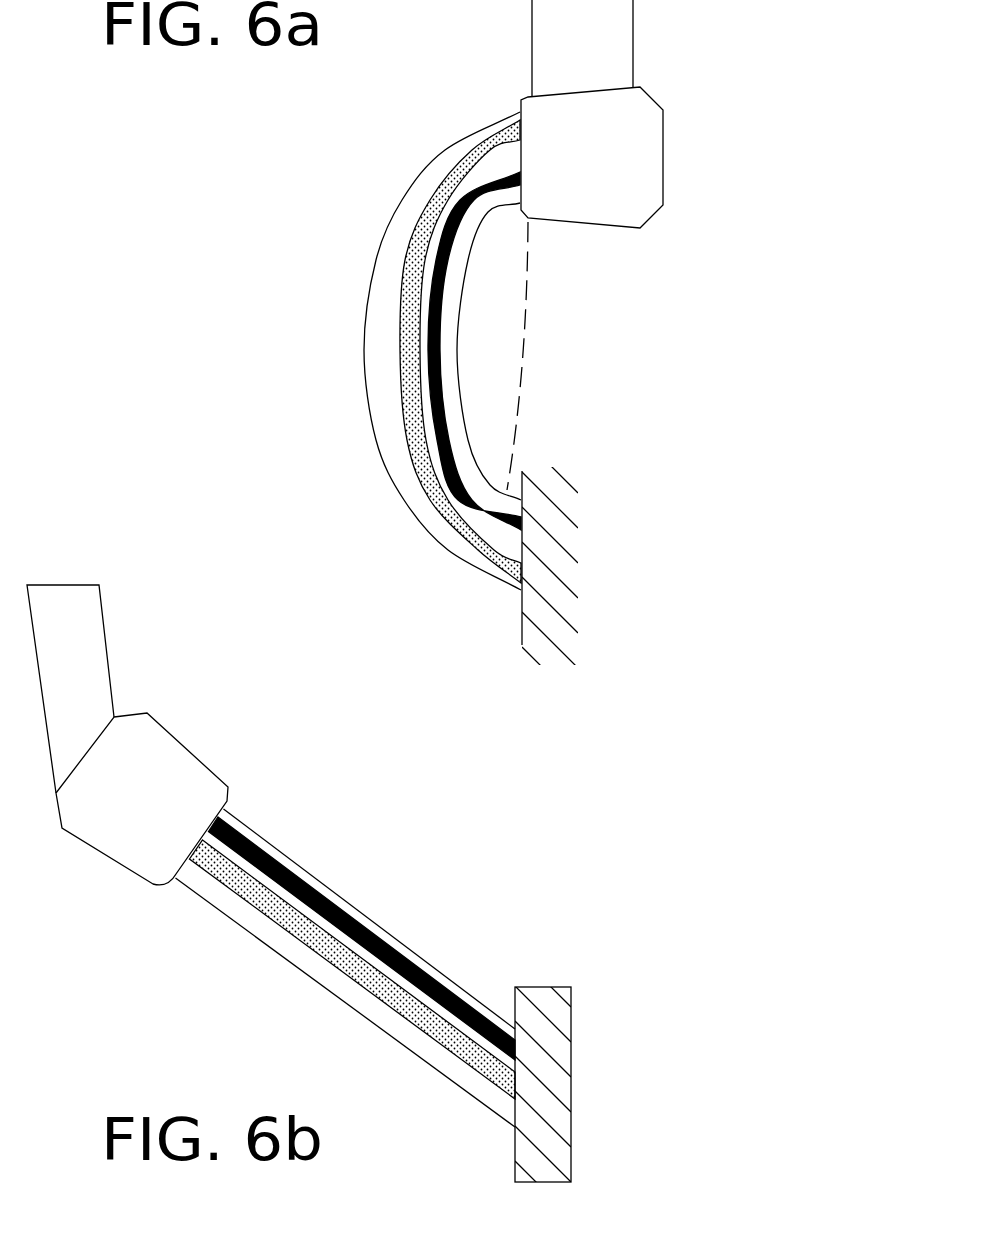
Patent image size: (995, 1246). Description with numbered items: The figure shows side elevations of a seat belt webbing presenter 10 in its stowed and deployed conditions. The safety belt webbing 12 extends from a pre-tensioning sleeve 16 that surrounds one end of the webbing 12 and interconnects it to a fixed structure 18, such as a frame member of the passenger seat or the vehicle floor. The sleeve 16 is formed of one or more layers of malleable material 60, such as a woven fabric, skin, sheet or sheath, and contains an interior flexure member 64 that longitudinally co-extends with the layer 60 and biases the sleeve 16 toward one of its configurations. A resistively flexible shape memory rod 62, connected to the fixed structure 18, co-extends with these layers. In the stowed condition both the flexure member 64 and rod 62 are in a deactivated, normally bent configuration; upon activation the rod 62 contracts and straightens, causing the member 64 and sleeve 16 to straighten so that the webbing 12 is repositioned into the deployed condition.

In FIG. 6a, the presenter 10 is at (677, 302).
In FIG. 6a, the safety belt webbing 12 is at (606, 55).
In FIG. 6b, the safety belt webbing 12 is at (98, 655).
In FIG. 6a, the pre-tensioning sleeve 16 is at (612, 180).
In FIG. 6b, the pre-tensioning sleeve 16 is at (169, 806).
In FIG. 6a, the fixed structure 18 is at (575, 525).
In FIG. 6b, the fixed structure 18 is at (543, 1084).
In FIG. 6a, the malleable material layer 60 is at (452, 135).
In FIG. 6a, the shape memory rod 62 is at (432, 212).
In FIG. 6b, the shape memory rod 62 is at (322, 937).
In FIG. 6a, the flexure member 64 is at (428, 313).
In FIG. 6b, the flexure member 64 is at (407, 962).